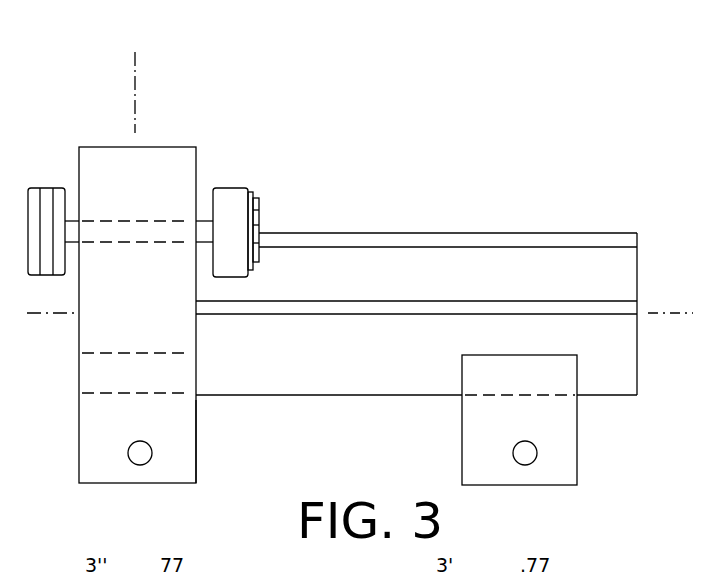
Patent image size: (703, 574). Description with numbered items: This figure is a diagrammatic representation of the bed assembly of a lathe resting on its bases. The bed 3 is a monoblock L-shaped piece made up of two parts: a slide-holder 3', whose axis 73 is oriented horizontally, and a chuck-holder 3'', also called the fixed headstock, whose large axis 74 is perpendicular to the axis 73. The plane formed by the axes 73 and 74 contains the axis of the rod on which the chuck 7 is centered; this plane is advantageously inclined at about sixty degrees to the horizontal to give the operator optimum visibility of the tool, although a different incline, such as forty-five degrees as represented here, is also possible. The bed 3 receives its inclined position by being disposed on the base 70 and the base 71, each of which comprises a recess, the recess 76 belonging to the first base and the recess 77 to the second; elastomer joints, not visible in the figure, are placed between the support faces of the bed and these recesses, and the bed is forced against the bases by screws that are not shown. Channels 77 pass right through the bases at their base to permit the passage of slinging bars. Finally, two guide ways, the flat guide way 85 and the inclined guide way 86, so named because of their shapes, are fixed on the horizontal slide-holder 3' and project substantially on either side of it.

The bed 3 is at (399, 196).
The slide-holder 3' is at (416, 296).
The chuck-holder 3'' is at (119, 305).
The chuck 7 is at (232, 198).
The base 70 is at (196, 450).
The base 71 is at (462, 468).
The axis of the slide-holder 73 is at (36, 290).
The large axis of the chuck-holder 74 is at (138, 128).
The recess 76 is at (643, 478).
The channels 77 is at (140, 465).
The flat guide way 85 is at (480, 245).
The inclined guide way 86 is at (343, 305).